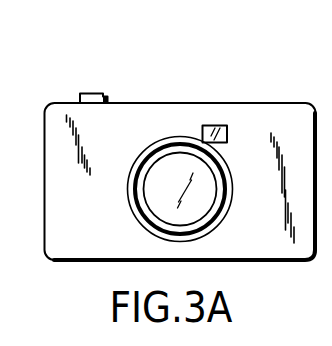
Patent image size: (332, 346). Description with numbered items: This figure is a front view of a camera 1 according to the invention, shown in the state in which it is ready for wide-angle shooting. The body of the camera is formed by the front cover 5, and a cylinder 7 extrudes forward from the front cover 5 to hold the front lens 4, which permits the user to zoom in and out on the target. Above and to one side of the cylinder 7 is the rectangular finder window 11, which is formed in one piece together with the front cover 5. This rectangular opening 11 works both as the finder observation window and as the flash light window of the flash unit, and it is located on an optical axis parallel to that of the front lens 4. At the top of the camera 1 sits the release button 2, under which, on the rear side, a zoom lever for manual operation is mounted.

The camera 1 is at (154, 88).
The release button 2 is at (95, 93).
The front lens 4 is at (155, 198).
The front cover 5 is at (292, 112).
The cylinder 7 is at (226, 212).
The finder window 11 is at (211, 125).